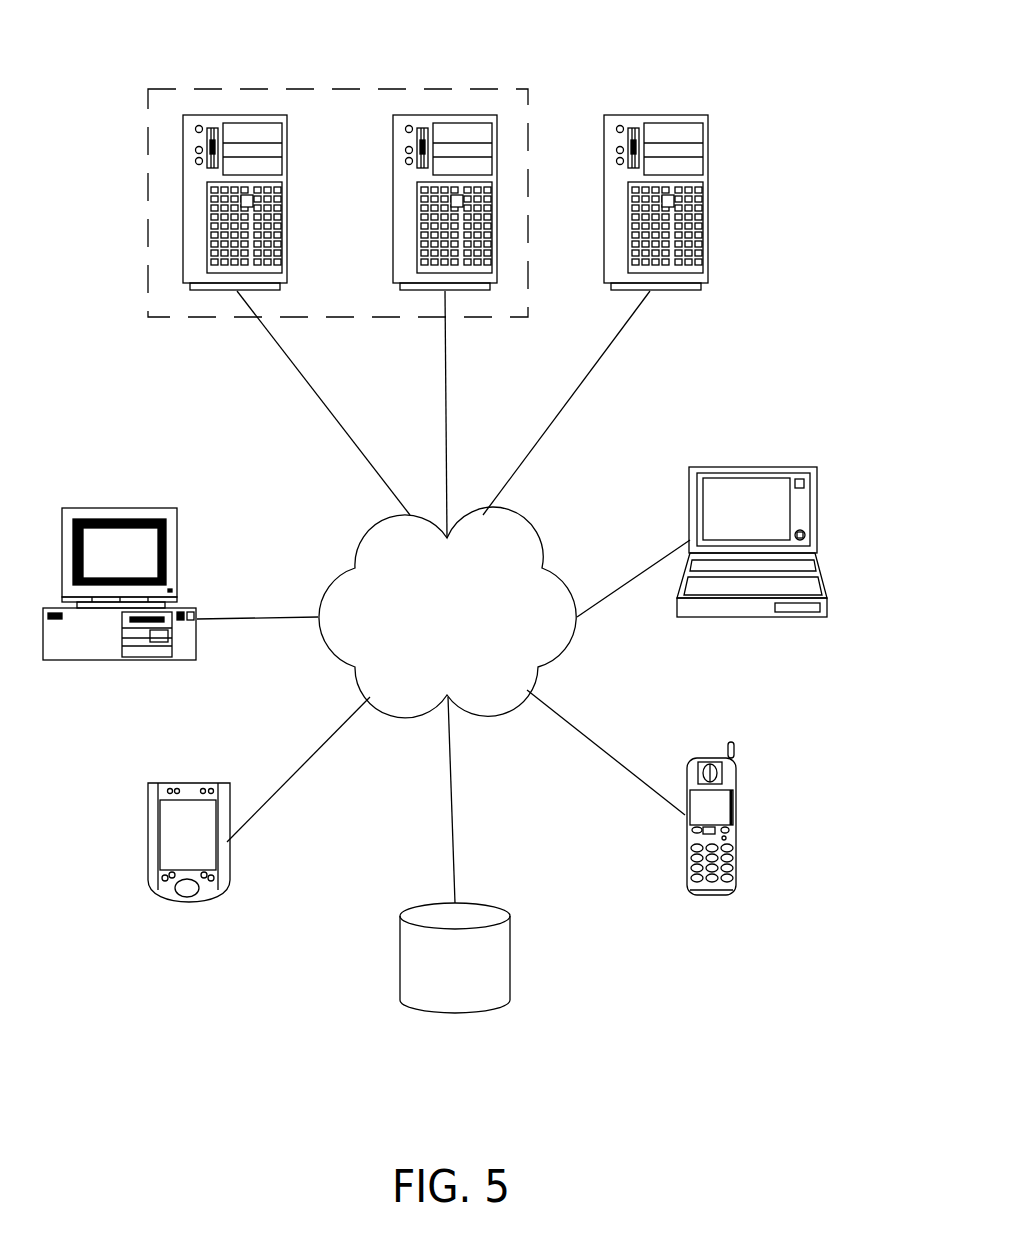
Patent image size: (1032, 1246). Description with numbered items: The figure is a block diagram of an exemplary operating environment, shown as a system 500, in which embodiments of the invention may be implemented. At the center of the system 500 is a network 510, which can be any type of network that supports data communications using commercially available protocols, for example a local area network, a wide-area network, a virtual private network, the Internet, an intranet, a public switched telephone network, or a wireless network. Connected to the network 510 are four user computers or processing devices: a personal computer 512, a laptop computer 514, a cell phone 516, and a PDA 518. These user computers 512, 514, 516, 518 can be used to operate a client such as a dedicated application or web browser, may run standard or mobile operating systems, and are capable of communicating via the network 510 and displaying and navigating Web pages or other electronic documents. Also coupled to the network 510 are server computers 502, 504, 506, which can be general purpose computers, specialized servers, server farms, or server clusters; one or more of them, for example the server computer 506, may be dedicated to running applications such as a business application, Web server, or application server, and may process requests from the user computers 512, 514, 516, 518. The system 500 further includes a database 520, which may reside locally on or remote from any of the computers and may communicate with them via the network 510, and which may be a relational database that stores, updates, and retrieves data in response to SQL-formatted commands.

The system 500 is at (800, 114).
The server computer 502 is at (218, 112).
The server computer 504 is at (443, 112).
The server computer 506 is at (709, 198).
The network 510 is at (427, 662).
The user computer 512 is at (117, 508).
The user computer 514 is at (750, 467).
The user computer 516 is at (707, 895).
The user computer 518 is at (188, 902).
The database 520 is at (436, 1002).